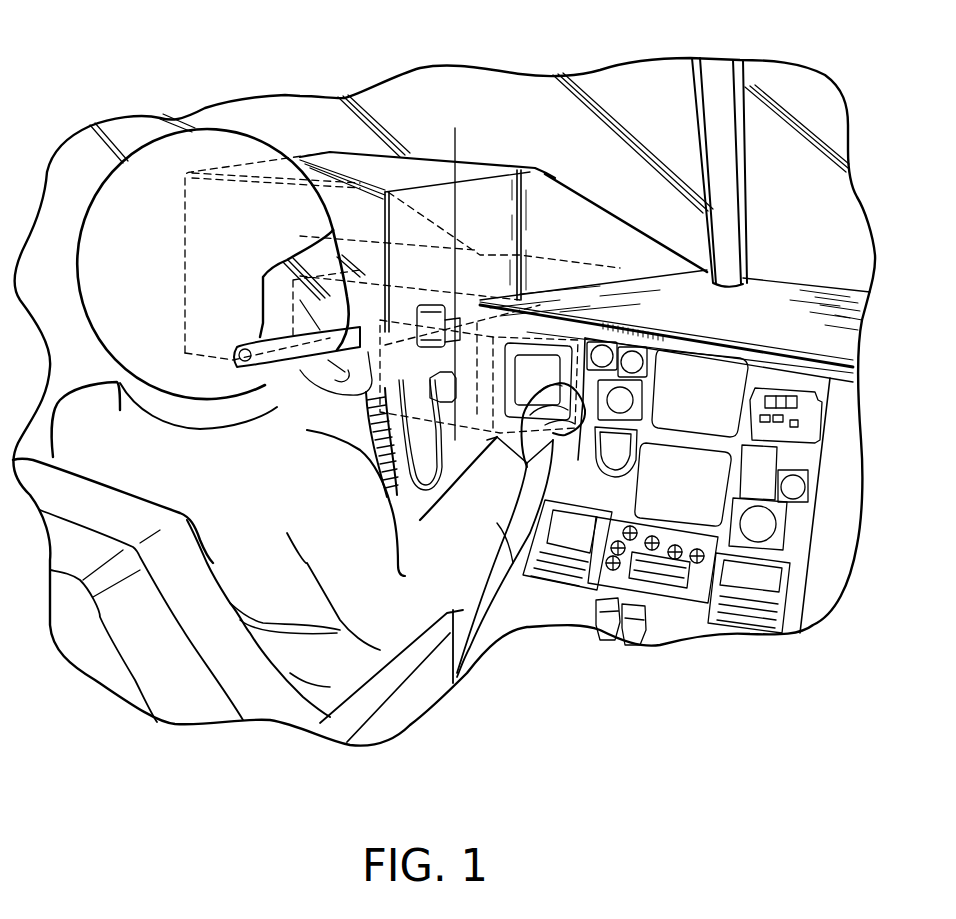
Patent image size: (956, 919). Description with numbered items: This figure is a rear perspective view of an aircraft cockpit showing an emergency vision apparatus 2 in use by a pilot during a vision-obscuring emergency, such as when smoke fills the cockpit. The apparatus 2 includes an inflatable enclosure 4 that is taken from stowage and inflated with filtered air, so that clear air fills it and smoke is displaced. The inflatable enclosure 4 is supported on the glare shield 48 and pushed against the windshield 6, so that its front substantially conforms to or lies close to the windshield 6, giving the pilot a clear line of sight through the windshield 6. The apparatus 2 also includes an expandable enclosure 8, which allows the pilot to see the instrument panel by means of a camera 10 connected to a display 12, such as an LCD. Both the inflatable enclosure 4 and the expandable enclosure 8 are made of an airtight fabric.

The emergency vision apparatus 2 is at (510, 140).
The inflatable enclosure 4 is at (345, 150).
The windshield 6 is at (605, 90).
The expandable enclosure 8 is at (478, 137).
The camera 10 is at (675, 326).
The display 12 is at (418, 322).
The glare shield 48 is at (793, 303).